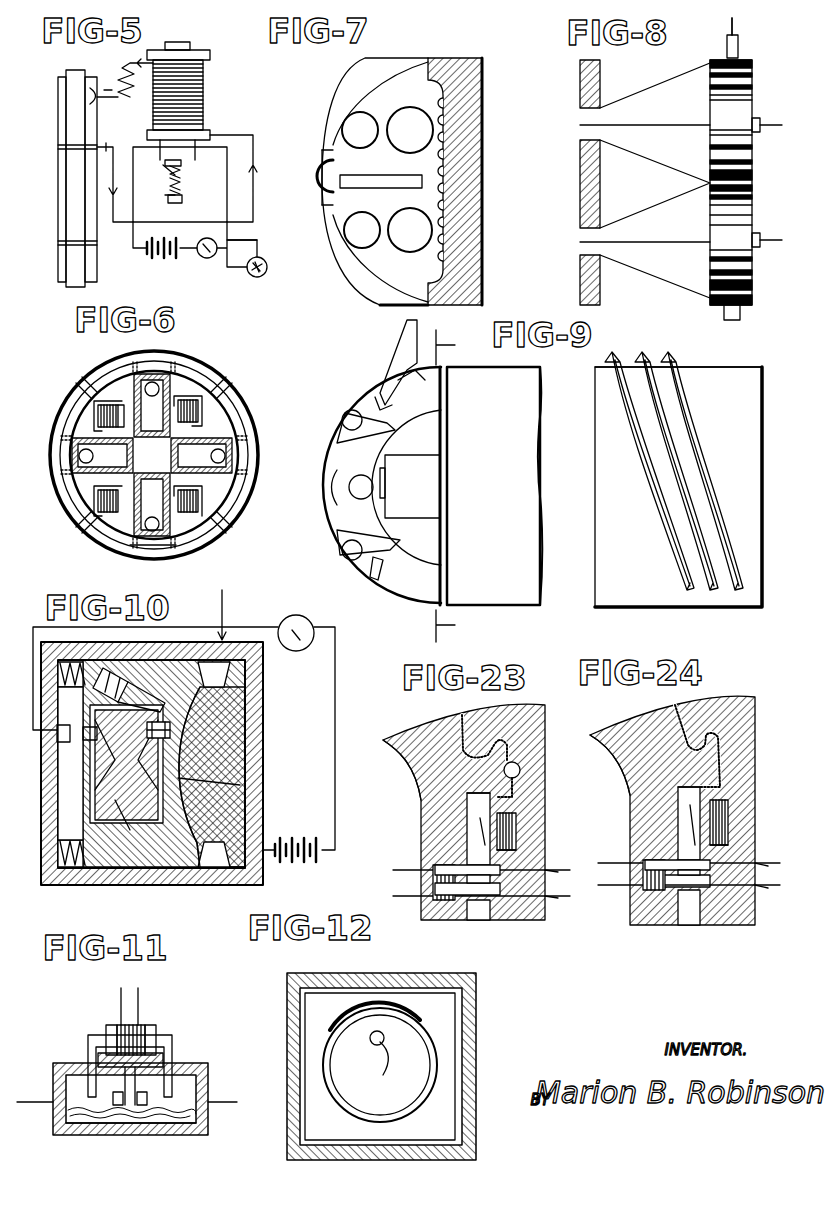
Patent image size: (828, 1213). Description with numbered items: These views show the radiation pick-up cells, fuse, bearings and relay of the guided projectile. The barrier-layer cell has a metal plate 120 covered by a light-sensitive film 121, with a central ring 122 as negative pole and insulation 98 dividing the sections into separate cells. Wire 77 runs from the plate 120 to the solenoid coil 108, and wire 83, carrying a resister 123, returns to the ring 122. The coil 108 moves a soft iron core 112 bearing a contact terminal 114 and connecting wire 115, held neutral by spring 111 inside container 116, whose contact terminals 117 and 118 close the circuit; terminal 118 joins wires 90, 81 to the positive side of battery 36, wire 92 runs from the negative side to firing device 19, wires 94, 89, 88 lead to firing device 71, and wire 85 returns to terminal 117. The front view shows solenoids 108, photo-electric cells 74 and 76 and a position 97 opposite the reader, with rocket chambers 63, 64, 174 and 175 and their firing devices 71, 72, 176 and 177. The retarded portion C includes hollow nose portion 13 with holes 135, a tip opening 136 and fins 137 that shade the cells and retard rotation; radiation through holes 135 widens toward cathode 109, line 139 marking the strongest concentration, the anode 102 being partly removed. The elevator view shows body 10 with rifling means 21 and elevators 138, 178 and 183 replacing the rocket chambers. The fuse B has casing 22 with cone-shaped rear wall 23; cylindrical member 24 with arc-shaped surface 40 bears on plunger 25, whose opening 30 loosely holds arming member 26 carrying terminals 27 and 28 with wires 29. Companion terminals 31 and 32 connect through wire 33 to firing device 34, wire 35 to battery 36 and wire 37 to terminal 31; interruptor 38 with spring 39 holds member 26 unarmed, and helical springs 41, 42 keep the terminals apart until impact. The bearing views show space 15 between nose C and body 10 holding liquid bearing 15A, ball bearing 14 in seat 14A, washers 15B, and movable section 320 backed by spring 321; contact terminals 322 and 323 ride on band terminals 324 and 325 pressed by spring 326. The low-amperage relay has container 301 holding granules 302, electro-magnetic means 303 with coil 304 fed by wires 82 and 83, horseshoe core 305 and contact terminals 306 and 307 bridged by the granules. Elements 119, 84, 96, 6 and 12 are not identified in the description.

In FIG. 5, the metal plate 120 is at (62, 112).
In FIG. 6, the metal plate 120 is at (121, 406).
In FIG. 5, the light sensitive film 121 is at (72, 130).
In FIG. 6, the light sensitive film 121 is at (90, 376).
In FIG. 5, the insulation 98 is at (52, 147).
In FIG. 6, the insulation 98 is at (82, 386).
In FIG. 5, the central ring 122 is at (97, 103).
In FIG. 5, the solenoid coil 108 is at (195, 91).
In FIG. 6, the solenoid coil 108 is at (183, 388).
In FIG. 5, the resister 123 is at (120, 67).
In FIG. 5, the wire 83 is at (120, 88).
In FIG. 8, the wire 83 is at (770, 125).
In FIG. 11, the wire 83 is at (119, 1003).
In FIG. 5, the wire 77 is at (118, 160).
In FIG. 8, the wire 77 is at (728, 31).
In FIG. 5, the wire 90 is at (133, 226).
In FIG. 23, the wire 90 is at (412, 896).
In FIG. 24, the wire 90 is at (618, 888).
In FIG. 11, the wire 90 is at (212, 1102).
In FIG. 5, the contact terminal 118 is at (165, 150).
In FIG. 5, the contact terminal 117 is at (192, 151).
In FIG. 5, the connecting wire 115 is at (186, 166).
In FIG. 5, the contact terminal 114 is at (184, 176).
In FIG. 5, the spring 111 is at (186, 187).
In FIG. 5, the container 116 is at (184, 202).
In FIG. 5, the soft iron core 112 is at (168, 168).
In FIG. 5, the relay lead 119 is at (167, 195).
In FIG. 5, the wire 81 is at (133, 244).
In FIG. 23, the wire 81 is at (550, 900).
In FIG. 24, the wire 81 is at (760, 890).
In FIG. 5, the battery 36 is at (165, 261).
In FIG. 10, the battery 36 is at (298, 835).
In FIG. 5, the wire 92 is at (204, 257).
In FIG. 5, the firing device 19 is at (208, 258).
In FIG. 5, the firing device 71 is at (266, 268).
In FIG. 6, the firing device 71 is at (152, 532).
In FIG. 5, the wire 94 is at (254, 272).
In FIG. 23, the wire 94 is at (553, 880).
In FIG. 24, the wire 94 is at (762, 862).
In FIG. 5, the wire 89 is at (244, 286).
In FIG. 23, the wire 89 is at (412, 870).
In FIG. 24, the wire 89 is at (620, 863).
In FIG. 5, the wire 88 is at (243, 294).
In FIG. 5, the wire 85 is at (257, 241).
In FIG. 11, the wire 85 is at (35, 1100).
In FIG. 7, the ball bearing 14 is at (448, 155).
In FIG. 23, the ball bearing 14 is at (522, 768).
In FIG. 7, the body 10 is at (467, 66).
In FIG. 9, the body 10 is at (738, 382).
In FIG. 23, the body 10 is at (545, 717).
In FIG. 24, the body 10 is at (740, 712).
In FIG. 7, the nose portion 13 is at (330, 205).
In FIG. 9, the nose portion 13 is at (335, 503).
In FIG. 7, the fins 137 is at (333, 80).
In FIG. 9, the fins 137 is at (345, 438).
In FIG. 7, the retarded portion C is at (333, 142).
In FIG. 23, the retarded portion C is at (418, 780).
In FIG. 24, the retarded portion C is at (620, 755).
In FIG. 7, the opening 136 is at (322, 177).
In FIG. 9, the opening 136 is at (330, 497).
In FIG. 7, the holes 135 is at (363, 128).
In FIG. 8, the holes 135 is at (585, 114).
In FIG. 9, the holes 135 is at (350, 415).
In FIG. 7, the rocket chamber 63 is at (412, 125).
In FIG. 6, the rocket chamber 63 is at (152, 405).
In FIG. 7, the rocket chamber 174 is at (408, 222).
In FIG. 6, the rocket chamber 174 is at (172, 462).
In FIG. 8, the straight line 139 is at (660, 125).
In FIG. 8, the cathode 109 is at (748, 249).
In FIG. 8, the anode 102 is at (740, 42).
In FIG. 8, the contact 84 is at (770, 240).
In FIG. 6, the outer ring 96 is at (253, 432).
In FIG. 6, the nose position 97 is at (54, 495).
In FIG. 6, the photo-electric cell 74 is at (120, 357).
In FIG. 6, the rocket chamber 64 is at (210, 560).
In FIG. 6, the rocket chamber 175 is at (133, 453).
In FIG. 6, the firing device 72 is at (158, 381).
In FIG. 6, the firing device 176 is at (79, 456).
In FIG. 6, the firing device 177 is at (226, 457).
In FIG. 6, the photo-electric cell 76 is at (126, 552).
In FIG. 9, the elevator 183 is at (410, 598).
In FIG. 9, the elevator 178 is at (440, 504).
In FIG. 9, the section line 6 is at (453, 486).
In FIG. 9, the elevator 138 is at (390, 368).
In FIG. 9, the body 12 is at (762, 530).
In FIG. 9, the rifling means 21 is at (675, 358).
In FIG. 10, the fuse casing 22 is at (243, 650).
In FIG. 12, the fuse casing 22 is at (322, 975).
In FIG. 10, the plunger 25 is at (100, 885).
In FIG. 12, the plunger 25 is at (315, 1110).
In FIG. 10, the arming member 26 is at (105, 790).
In FIG. 12, the arming member 26 is at (408, 1085).
In FIG. 10, the cylindrical member 24 is at (230, 748).
In FIG. 10, the wire 33 is at (227, 643).
In FIG. 10, the fuse B is at (222, 608).
In FIG. 10, the helical spring 41 is at (57, 678).
In FIG. 10, the helical spring 42 is at (57, 852).
In FIG. 10, the connecting wire 29 is at (105, 760).
In FIG. 10, the contact terminal 32 is at (62, 735).
In FIG. 10, the contact terminal 28 is at (88, 742).
In FIG. 12, the contact terminal 28 is at (374, 1062).
In FIG. 10, the centrifugal interruptor 38 is at (125, 700).
In FIG. 10, the spring 39 is at (125, 690).
In FIG. 10, the contact terminal 31 is at (165, 727).
In FIG. 10, the rear wall 23 is at (175, 733).
In FIG. 10, the contact terminal 27 is at (230, 715).
In FIG. 10, the arc-shaped surface 40 is at (240, 795).
In FIG. 10, the wire 37 is at (240, 850).
In FIG. 10, the cylindrical opening 30 is at (128, 878).
In FIG. 12, the cylindrical opening 30 is at (368, 1018).
In FIG. 10, the wire 35 is at (335, 700).
In FIG. 10, the firing device 34 is at (304, 648).
In FIG. 23, the washers 15B is at (460, 722).
In FIG. 24, the washers 15B is at (690, 715).
In FIG. 23, the seat 14A is at (520, 776).
In FIG. 23, the space 15 is at (478, 814).
In FIG. 24, the space 15 is at (688, 797).
In FIG. 23, the movable section 320 is at (478, 828).
In FIG. 24, the movable section 320 is at (690, 812).
In FIG. 23, the liquid bearing 15A is at (512, 848).
In FIG. 24, the liquid bearing 15A is at (712, 822).
In FIG. 23, the contact terminal 322 is at (460, 865).
In FIG. 24, the contact terminal 322 is at (668, 858).
In FIG. 23, the spring 321 is at (512, 852).
In FIG. 24, the spring 321 is at (725, 840).
In FIG. 23, the spring 326 is at (433, 890).
In FIG. 24, the spring 326 is at (640, 895).
In FIG. 23, the contact terminal 323 is at (470, 910).
In FIG. 24, the contact terminal 323 is at (670, 900).
In FIG. 23, the contact terminal 324 is at (500, 895).
In FIG. 24, the contact terminal 324 is at (705, 860).
In FIG. 23, the contact terminal 325 is at (485, 905).
In FIG. 24, the contact terminal 325 is at (700, 905).
In FIG. 11, the container 301 is at (205, 1078).
In FIG. 11, the granules 302 is at (178, 1130).
In FIG. 11, the contact terminal 306 is at (106, 1130).
In FIG. 11, the soft iron core 305 is at (163, 1055).
In FIG. 11, the coil 304 is at (145, 1040).
In FIG. 11, the electro-magnetic means 303 is at (110, 1030).
In FIG. 11, the wire 82 is at (142, 1003).
In FIG. 11, the contact terminal 307 is at (136, 1115).